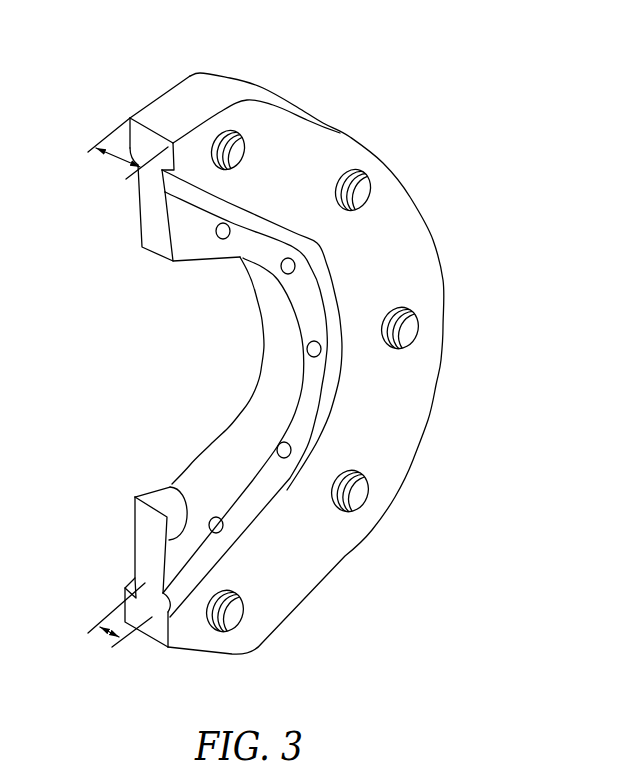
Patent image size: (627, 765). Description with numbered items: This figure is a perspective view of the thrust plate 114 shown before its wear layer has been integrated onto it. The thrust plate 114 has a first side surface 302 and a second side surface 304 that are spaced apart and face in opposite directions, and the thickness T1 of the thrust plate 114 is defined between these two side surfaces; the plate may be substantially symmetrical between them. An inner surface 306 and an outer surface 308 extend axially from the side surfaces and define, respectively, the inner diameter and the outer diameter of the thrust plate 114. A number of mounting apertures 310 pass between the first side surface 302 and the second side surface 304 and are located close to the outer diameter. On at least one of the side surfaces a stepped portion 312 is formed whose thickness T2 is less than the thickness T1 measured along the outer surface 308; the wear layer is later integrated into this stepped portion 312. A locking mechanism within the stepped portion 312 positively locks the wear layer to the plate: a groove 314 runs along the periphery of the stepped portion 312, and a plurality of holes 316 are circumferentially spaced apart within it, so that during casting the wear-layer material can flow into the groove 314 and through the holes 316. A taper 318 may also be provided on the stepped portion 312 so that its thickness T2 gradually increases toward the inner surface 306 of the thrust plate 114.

The thrust plate 114 is at (311, 359).
The first side surface 302 is at (396, 278).
The second side surface 304 is at (162, 94).
The inner surface 306 is at (262, 392).
The outer surface 308 is at (447, 326).
The mounting apertures 310 is at (237, 150).
The stepped portion 312 is at (153, 213).
The groove 314 is at (195, 570).
The holes 316 is at (289, 455).
The taper 318 is at (167, 260).
The thickness T1 is at (123, 152).
The thickness T2 is at (110, 633).